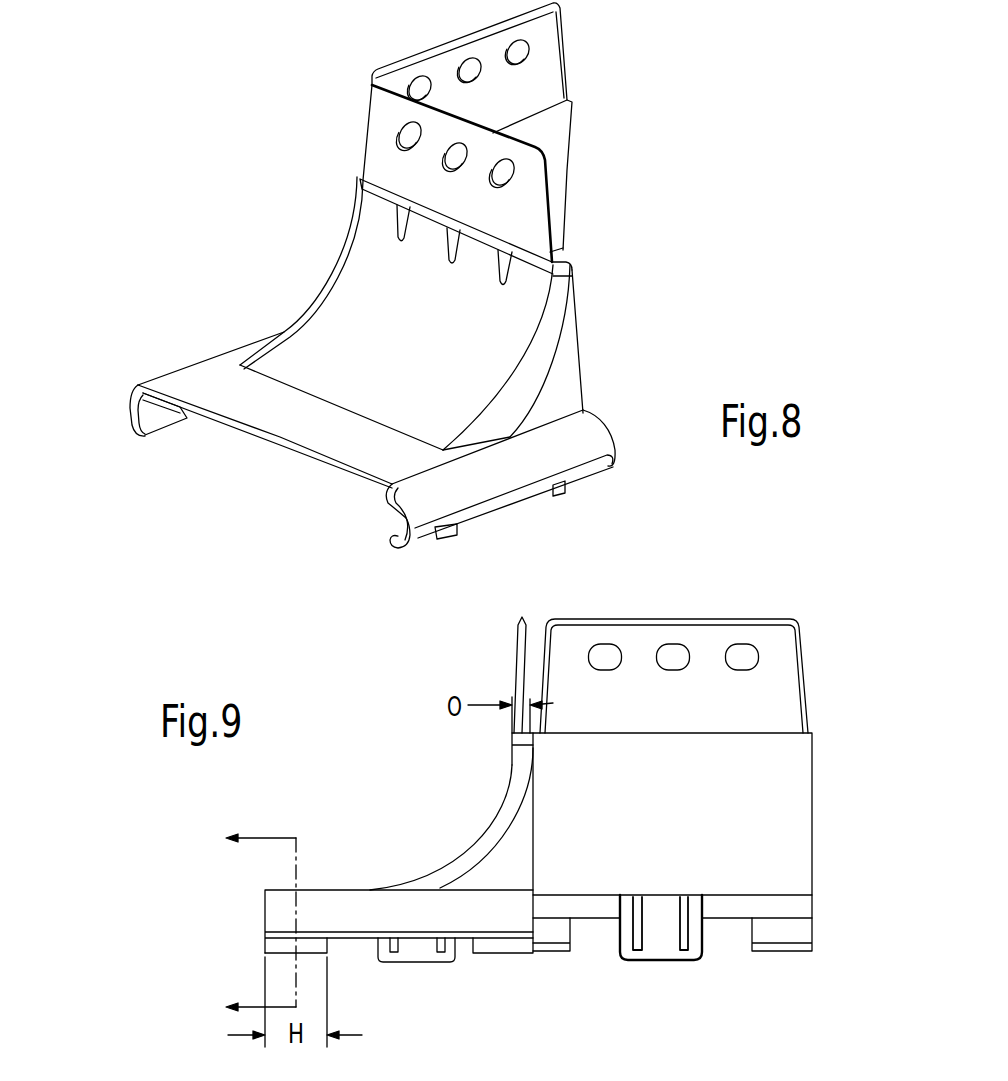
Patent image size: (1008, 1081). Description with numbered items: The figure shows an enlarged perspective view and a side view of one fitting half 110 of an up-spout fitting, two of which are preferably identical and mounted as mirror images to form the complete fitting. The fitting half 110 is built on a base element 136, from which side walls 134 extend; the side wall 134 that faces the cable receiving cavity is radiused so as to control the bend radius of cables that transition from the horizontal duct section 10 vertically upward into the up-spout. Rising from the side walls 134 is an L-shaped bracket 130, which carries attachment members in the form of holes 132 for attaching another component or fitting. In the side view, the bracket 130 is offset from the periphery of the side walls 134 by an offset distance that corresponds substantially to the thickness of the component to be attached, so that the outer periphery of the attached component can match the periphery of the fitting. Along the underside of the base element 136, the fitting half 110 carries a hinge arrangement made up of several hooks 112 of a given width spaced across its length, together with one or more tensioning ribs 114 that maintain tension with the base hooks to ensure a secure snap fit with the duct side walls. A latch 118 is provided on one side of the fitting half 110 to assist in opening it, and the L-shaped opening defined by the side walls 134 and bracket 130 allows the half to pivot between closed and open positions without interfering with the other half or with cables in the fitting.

In FIG. 8, the fitting half 110 is at (303, 274).
In FIG. 9, the fitting half 110 is at (474, 818).
In FIG. 8, the hook elements 112 is at (172, 422).
In FIG. 9, the hook elements 112 is at (265, 945).
In FIG. 9, the tensioning ribs 114 is at (423, 958).
In FIG. 8, the latch 118 is at (507, 503).
In FIG. 8, the L-shaped bracket 130 is at (378, 118).
In FIG. 9, the L-shaped bracket 130 is at (783, 668).
In FIG. 8, the holes 132 is at (400, 142).
In FIG. 8, the side walls 134 is at (555, 168).
In FIG. 8, the base element 136 is at (235, 387).
In FIG. 9, the horizontal duct section 10 is at (243, 921).